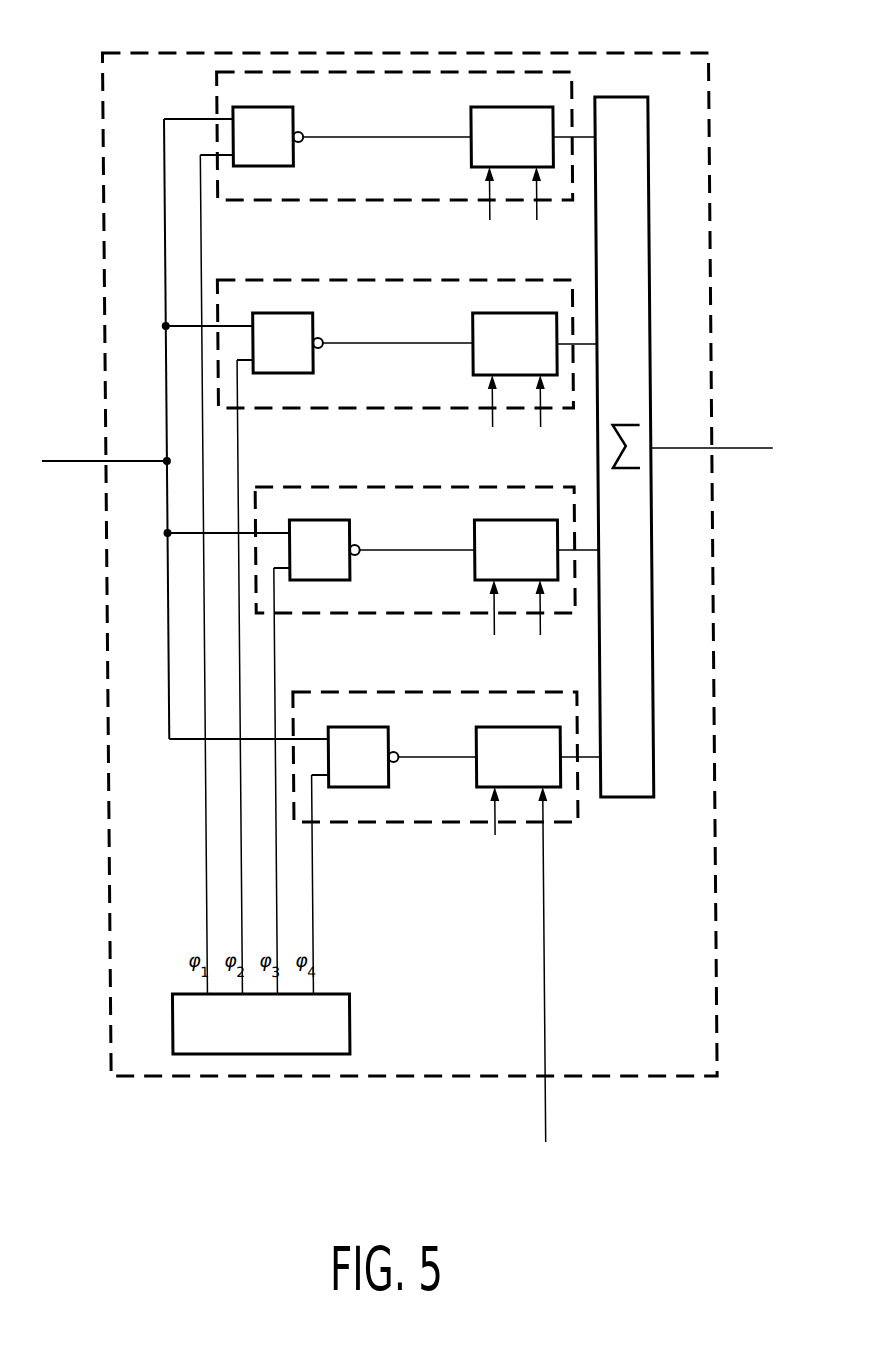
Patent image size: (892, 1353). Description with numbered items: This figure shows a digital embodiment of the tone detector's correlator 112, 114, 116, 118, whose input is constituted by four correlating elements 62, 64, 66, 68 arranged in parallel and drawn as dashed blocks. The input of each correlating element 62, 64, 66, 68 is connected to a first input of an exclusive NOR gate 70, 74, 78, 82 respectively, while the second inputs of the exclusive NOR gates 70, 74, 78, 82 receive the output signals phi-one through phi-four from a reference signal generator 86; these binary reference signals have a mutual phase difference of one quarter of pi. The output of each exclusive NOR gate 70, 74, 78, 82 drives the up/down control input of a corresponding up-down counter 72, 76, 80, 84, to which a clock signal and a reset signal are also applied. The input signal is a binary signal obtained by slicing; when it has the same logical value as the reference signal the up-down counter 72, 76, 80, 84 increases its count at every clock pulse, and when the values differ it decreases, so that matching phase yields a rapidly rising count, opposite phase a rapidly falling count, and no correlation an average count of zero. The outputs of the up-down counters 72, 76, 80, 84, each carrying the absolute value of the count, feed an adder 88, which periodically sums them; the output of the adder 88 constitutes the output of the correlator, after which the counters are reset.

The correlating element 62 is at (376, 200).
The correlating element 64 is at (378, 408).
The correlating element 66 is at (376, 613).
The correlating element 68 is at (385, 822).
The exclusive NOR gate 70 is at (292, 164).
The up-down counter 72 is at (470, 157).
The exclusive NOR gate 74 is at (310, 371).
The up-down counter 76 is at (470, 364).
The exclusive NOR gate 78 is at (345, 578).
The up-down counter 80 is at (470, 569).
The exclusive NOR gate 82 is at (367, 787).
The up-down counter 84 is at (470, 775).
The reference signal generator 86 is at (341, 1040).
The adder 88 is at (621, 797).
The correlator 112 is at (409, 538).
The correlator 114 is at (409, 538).
The correlator 116 is at (409, 538).
The correlator 118 is at (535, 53).